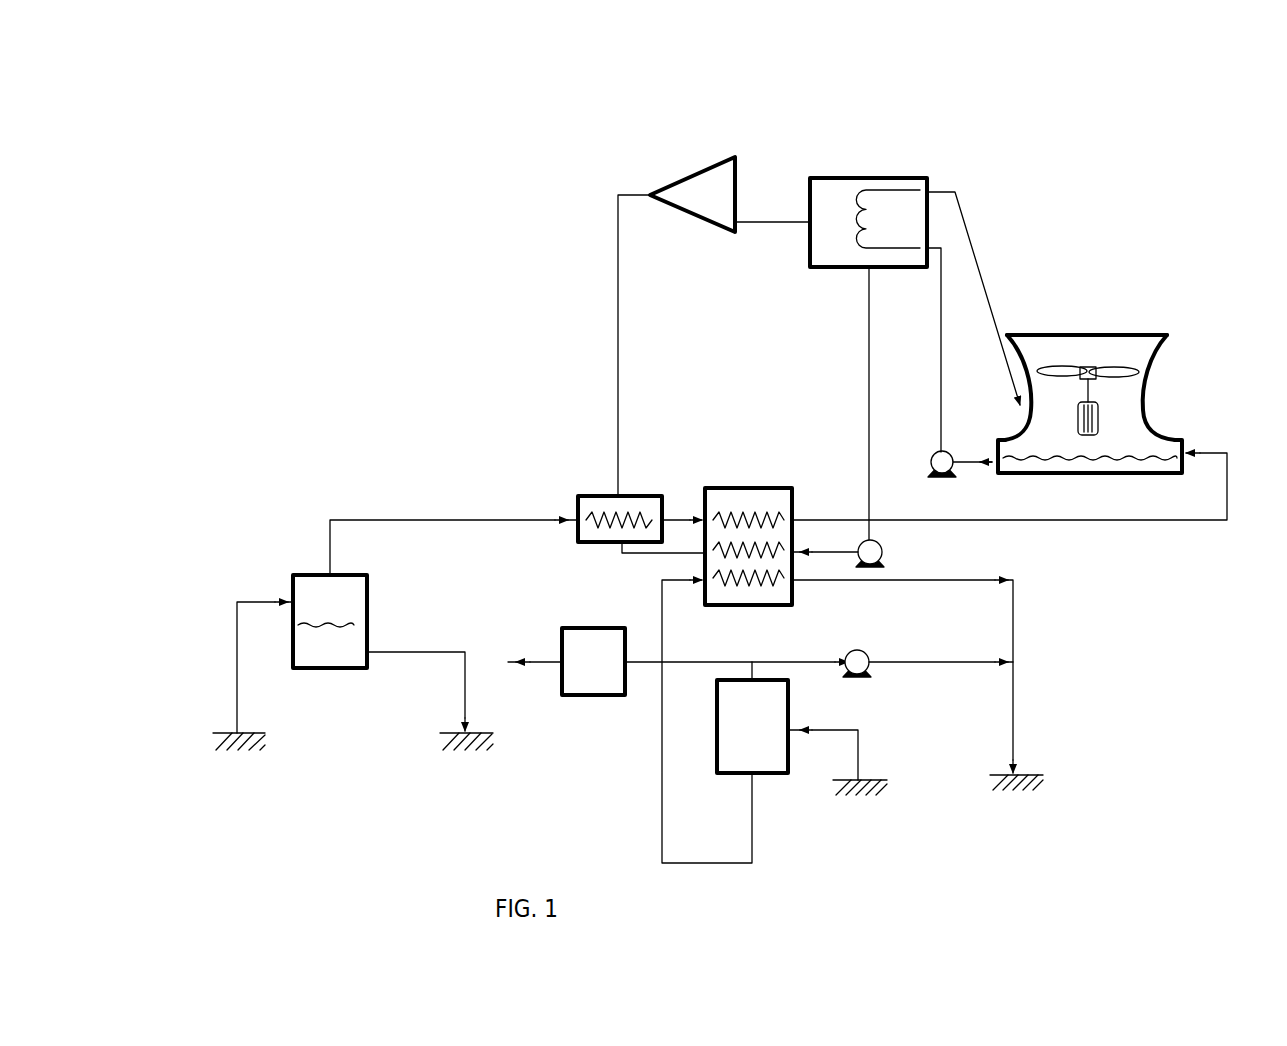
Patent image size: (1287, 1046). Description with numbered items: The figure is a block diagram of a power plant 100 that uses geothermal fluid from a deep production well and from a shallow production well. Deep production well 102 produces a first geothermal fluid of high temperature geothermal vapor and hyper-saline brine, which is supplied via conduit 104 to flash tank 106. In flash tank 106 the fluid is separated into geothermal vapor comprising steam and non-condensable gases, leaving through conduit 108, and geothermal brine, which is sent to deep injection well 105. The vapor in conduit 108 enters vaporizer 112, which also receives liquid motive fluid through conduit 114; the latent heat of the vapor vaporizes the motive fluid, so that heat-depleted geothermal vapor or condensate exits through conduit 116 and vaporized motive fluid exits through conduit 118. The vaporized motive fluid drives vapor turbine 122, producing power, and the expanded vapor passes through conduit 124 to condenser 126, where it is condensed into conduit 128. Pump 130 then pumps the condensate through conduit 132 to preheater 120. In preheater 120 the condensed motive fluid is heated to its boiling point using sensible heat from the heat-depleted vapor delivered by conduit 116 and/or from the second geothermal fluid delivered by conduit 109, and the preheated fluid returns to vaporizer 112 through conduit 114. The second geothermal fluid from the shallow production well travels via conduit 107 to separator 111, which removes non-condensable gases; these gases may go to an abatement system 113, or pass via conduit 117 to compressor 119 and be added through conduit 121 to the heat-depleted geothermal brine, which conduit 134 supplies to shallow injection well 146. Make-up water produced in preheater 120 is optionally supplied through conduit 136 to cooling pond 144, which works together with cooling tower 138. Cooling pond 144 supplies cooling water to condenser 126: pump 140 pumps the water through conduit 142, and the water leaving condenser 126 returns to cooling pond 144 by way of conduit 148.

The power plant 100 is at (258, 141).
The deep production well 102 is at (240, 735).
The conduit 104 is at (238, 632).
The deep injection well 105 is at (487, 735).
The flash tank 106 is at (365, 671).
The conduit 107 is at (858, 736).
The conduit 108 is at (328, 553).
The conduit 109 is at (664, 581).
The separator 111 is at (788, 771).
The vaporizer 112 is at (577, 545).
The abatement system 113 is at (588, 625).
The conduit 114 is at (656, 557).
The conduit 116 is at (684, 502).
The conduit 117 is at (812, 661).
The conduit 118 is at (619, 338).
The compressor 119 is at (851, 652).
The preheater 120 is at (788, 492).
The conduit 121 is at (938, 661).
The vapor turbine 122 is at (656, 190).
The conduit 124 is at (740, 222).
The condenser 126 is at (928, 180).
The conduit 128 is at (870, 338).
The pump 130 is at (883, 548).
The conduit 132 is at (808, 549).
The conduit 134 is at (1015, 596).
The conduit 136 is at (1070, 522).
The cooling tower 138 is at (1152, 378).
The pump 140 is at (930, 456).
The conduit 142 is at (942, 373).
The cooling pond 144 is at (1075, 475).
The shallow injection well 146 is at (1032, 778).
The conduit 148 is at (980, 268).